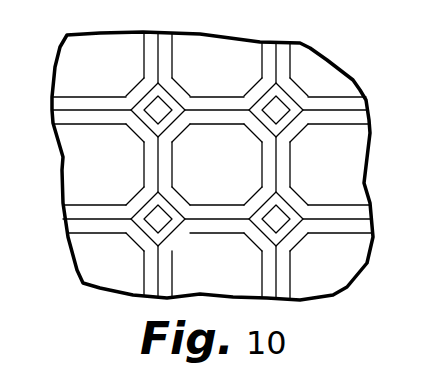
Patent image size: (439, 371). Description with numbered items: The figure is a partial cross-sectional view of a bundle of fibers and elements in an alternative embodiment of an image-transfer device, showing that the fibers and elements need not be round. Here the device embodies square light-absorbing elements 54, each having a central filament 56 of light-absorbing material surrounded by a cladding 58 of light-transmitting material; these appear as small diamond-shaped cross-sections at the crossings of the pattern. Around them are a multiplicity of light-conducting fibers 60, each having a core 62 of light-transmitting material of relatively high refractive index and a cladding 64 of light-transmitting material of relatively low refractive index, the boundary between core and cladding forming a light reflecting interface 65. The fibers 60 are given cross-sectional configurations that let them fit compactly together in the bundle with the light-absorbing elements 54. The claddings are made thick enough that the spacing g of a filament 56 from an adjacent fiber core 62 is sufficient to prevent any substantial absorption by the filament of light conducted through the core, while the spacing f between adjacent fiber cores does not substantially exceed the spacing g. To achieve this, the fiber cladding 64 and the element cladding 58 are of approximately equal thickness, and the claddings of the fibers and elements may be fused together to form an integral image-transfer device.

The light-absorbing element 54 is at (285, 102).
The central filament 56 is at (279, 113).
The element cladding 58 is at (295, 110).
The light-conducting fiber 60 is at (238, 177).
The core 62 is at (235, 188).
The fiber cladding 64 is at (264, 154).
The light reflecting interface 65 is at (183, 168).
The spacing between adjacent fiber cores f is at (108, 167).
The spacing of filament from adjacent fiber core g is at (130, 108).